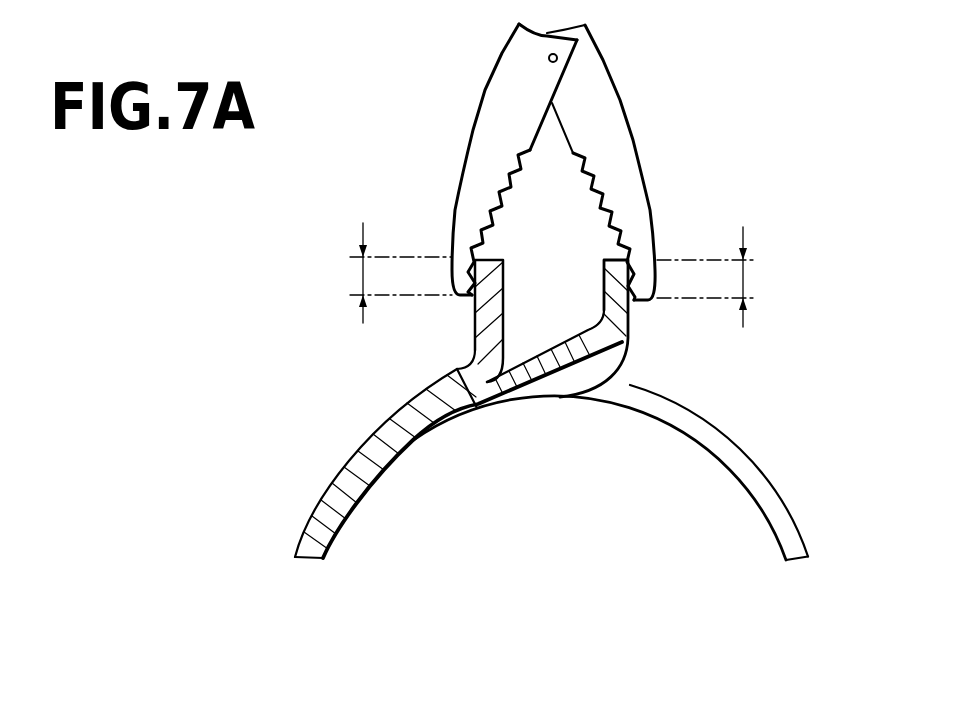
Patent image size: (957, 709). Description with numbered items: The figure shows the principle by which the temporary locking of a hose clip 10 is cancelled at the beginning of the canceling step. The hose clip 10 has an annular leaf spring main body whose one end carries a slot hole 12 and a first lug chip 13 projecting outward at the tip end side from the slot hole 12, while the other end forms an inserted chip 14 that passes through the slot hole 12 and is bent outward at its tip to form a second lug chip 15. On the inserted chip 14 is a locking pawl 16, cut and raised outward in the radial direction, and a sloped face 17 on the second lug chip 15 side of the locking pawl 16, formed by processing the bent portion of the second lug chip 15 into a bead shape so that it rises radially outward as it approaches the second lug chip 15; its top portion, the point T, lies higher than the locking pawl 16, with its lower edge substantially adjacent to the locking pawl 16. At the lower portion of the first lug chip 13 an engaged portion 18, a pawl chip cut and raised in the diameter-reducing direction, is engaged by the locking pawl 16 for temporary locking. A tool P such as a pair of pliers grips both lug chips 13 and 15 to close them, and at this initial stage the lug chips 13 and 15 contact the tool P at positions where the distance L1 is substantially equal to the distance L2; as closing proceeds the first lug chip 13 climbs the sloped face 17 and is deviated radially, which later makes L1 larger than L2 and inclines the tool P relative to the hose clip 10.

The tool P is at (628, 92).
The hose clip 10 is at (572, 451).
The slot hole 12 is at (707, 440).
The first lug chip 13 is at (482, 327).
The inserted chip 14 is at (322, 525).
The second lug chip 15 is at (614, 325).
The locking pawl 16 is at (437, 387).
The sloped face 17 is at (572, 348).
The engaged portion 18 is at (481, 387).
The point T is at (590, 316).
The element L1 is at (382, 273).
The element L2 is at (726, 277).